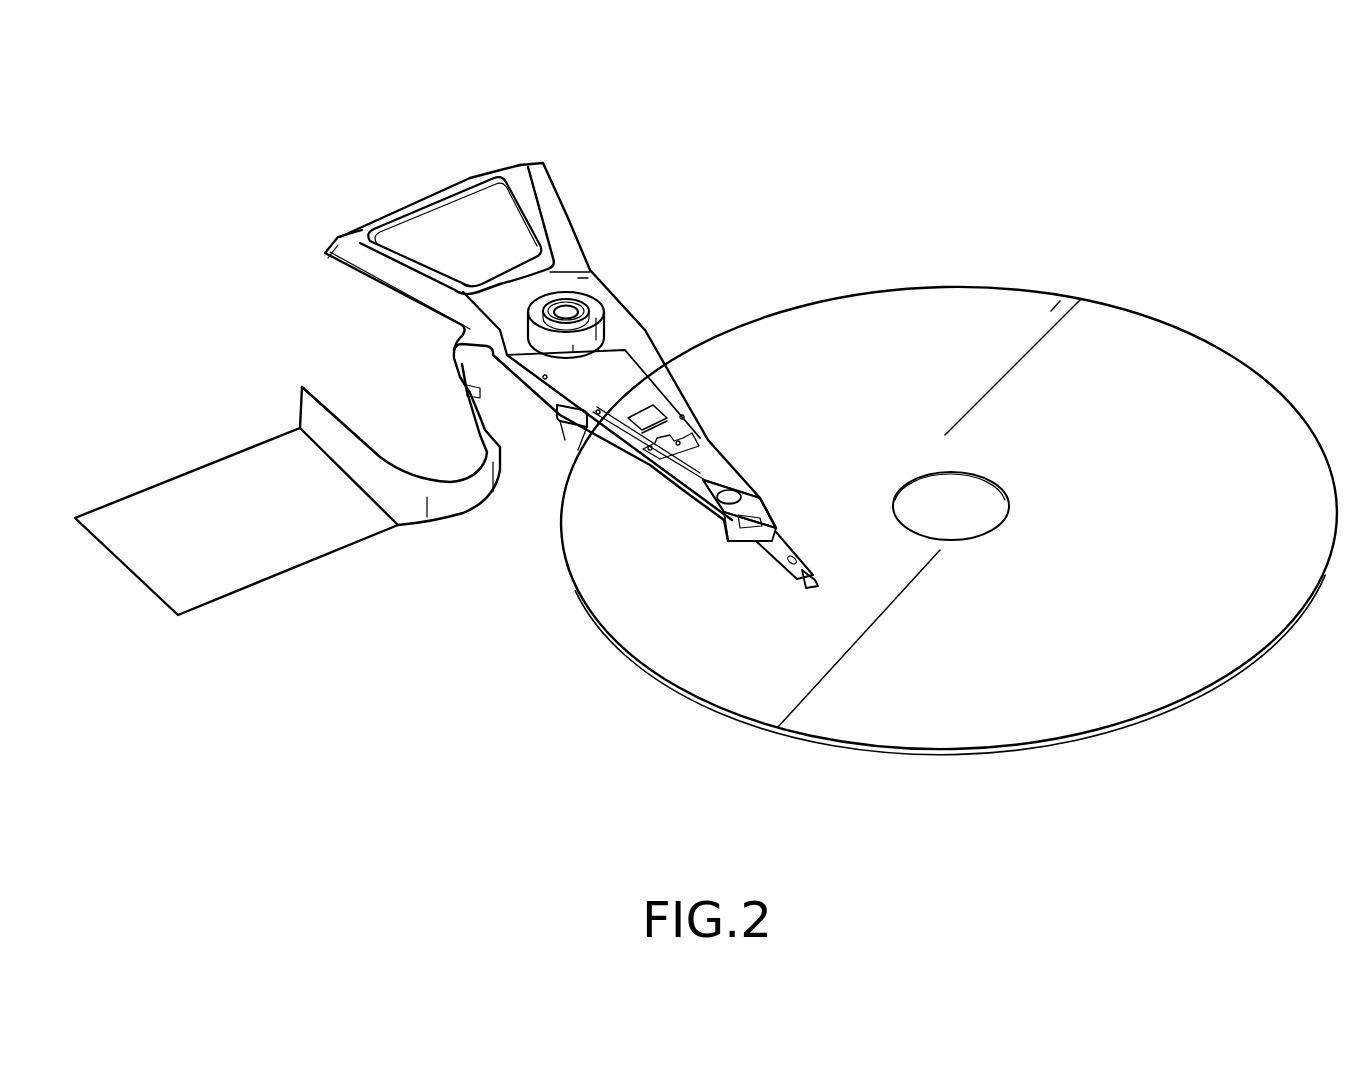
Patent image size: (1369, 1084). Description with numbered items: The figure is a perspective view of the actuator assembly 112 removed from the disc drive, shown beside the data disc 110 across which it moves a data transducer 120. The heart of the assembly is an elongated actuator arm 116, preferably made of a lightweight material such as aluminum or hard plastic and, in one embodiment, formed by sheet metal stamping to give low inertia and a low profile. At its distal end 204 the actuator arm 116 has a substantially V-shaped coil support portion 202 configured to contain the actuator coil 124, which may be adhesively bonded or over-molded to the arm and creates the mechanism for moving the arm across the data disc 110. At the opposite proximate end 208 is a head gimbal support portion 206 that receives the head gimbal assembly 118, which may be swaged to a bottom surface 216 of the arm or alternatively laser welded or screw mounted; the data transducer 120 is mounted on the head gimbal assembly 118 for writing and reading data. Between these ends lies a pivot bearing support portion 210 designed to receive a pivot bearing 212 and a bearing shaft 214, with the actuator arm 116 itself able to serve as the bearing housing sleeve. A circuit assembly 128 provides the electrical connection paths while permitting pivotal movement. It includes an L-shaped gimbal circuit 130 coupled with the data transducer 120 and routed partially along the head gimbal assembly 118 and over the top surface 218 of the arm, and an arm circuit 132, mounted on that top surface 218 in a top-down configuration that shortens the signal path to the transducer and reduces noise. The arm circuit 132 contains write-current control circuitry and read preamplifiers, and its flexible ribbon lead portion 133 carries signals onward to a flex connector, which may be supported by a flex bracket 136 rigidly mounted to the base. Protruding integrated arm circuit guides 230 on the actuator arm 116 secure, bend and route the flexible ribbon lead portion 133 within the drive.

The data disc 110 is at (1173, 518).
The actuator assembly 112 is at (949, 472).
The actuator arm 116 is at (380, 265).
The head gimbal assembly 118 is at (763, 564).
The data transducer 120 is at (808, 577).
The actuator coil 124 is at (457, 175).
The circuit assembly 128 is at (300, 481).
The gimbal circuit 130 is at (722, 540).
The arm circuit 132 is at (622, 420).
The flexible ribbon lead portion 133 is at (457, 507).
The flex bracket 136 is at (293, 547).
The coil support portion 202 is at (537, 362).
The distal end 204 is at (420, 261).
The head gimbal support portion 206 is at (750, 500).
The proximate end 208 is at (606, 352).
The pivot bearing support portion 210 is at (626, 406).
The pivot bearing 212 is at (621, 299).
The bearing shaft 214 is at (585, 302).
The bottom surface 216 is at (458, 320).
The top surface 218 is at (567, 245).
The integrated arm circuit guides 230 is at (460, 375).